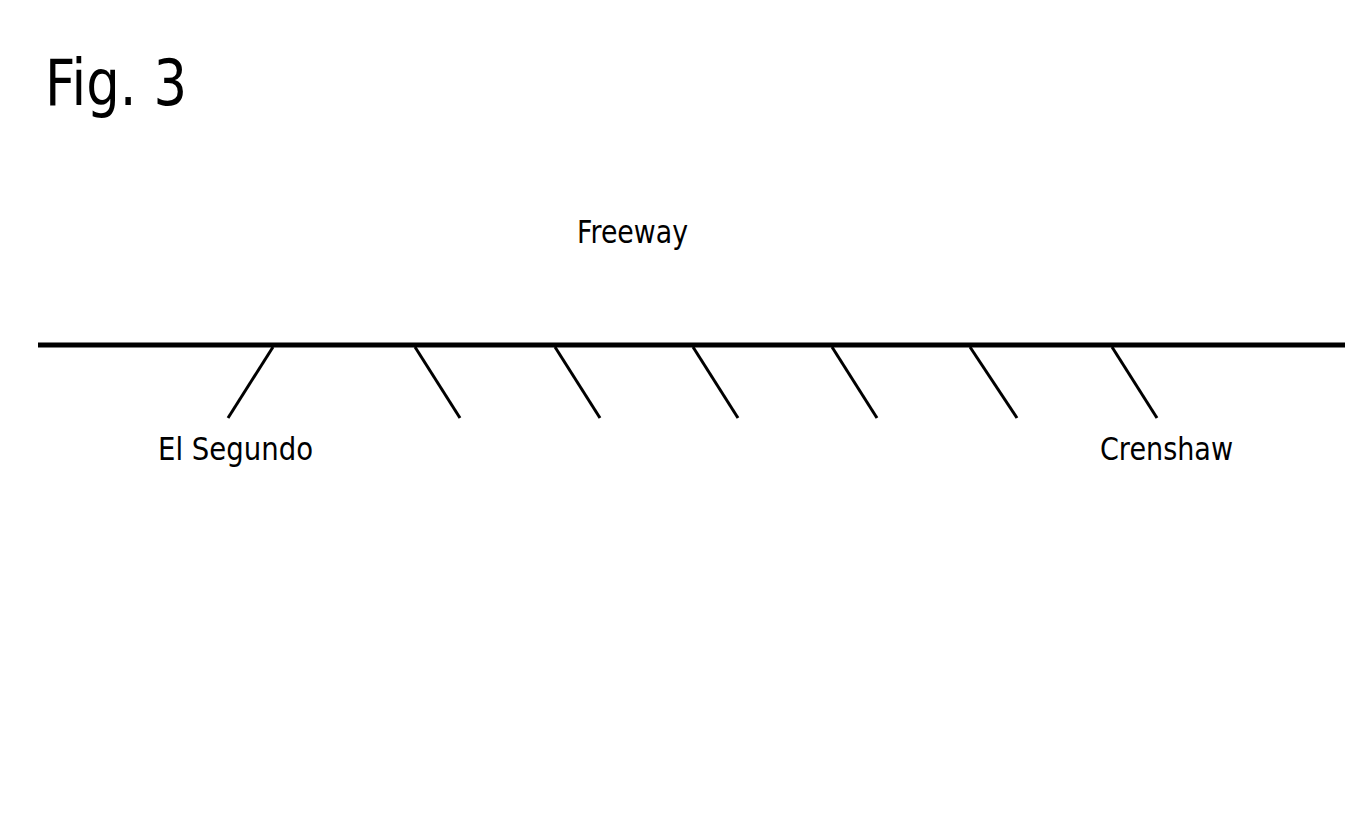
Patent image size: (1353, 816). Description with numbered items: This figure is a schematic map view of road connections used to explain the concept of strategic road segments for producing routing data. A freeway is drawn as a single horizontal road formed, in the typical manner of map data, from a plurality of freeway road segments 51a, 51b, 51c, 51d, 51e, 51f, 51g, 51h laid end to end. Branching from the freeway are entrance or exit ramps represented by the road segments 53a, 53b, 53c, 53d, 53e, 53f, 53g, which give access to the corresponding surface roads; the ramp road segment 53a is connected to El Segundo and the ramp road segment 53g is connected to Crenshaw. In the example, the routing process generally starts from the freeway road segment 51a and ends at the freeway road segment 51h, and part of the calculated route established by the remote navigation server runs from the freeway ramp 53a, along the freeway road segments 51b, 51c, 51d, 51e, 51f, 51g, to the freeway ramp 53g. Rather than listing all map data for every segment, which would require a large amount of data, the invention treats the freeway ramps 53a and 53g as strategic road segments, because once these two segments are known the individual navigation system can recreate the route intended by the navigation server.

The freeway road segment 51a is at (180, 344).
The freeway road segment 51b is at (348, 344).
The freeway road segment 51c is at (490, 344).
The freeway road segment 51d is at (630, 344).
The freeway road segment 51e is at (770, 344).
The freeway road segment 51f is at (908, 344).
The freeway road segment 51g is at (1047, 344).
The freeway road segment 51h is at (1232, 344).
The freeway ramp road segment 53a is at (243, 392).
The freeway ramp road segment 53b is at (437, 383).
The freeway ramp road segment 53c is at (577, 383).
The freeway ramp road segment 53d is at (715, 383).
The freeway ramp road segment 53e is at (854, 383).
The freeway ramp road segment 53f is at (993, 383).
The freeway ramp road segment 53g is at (1133, 383).